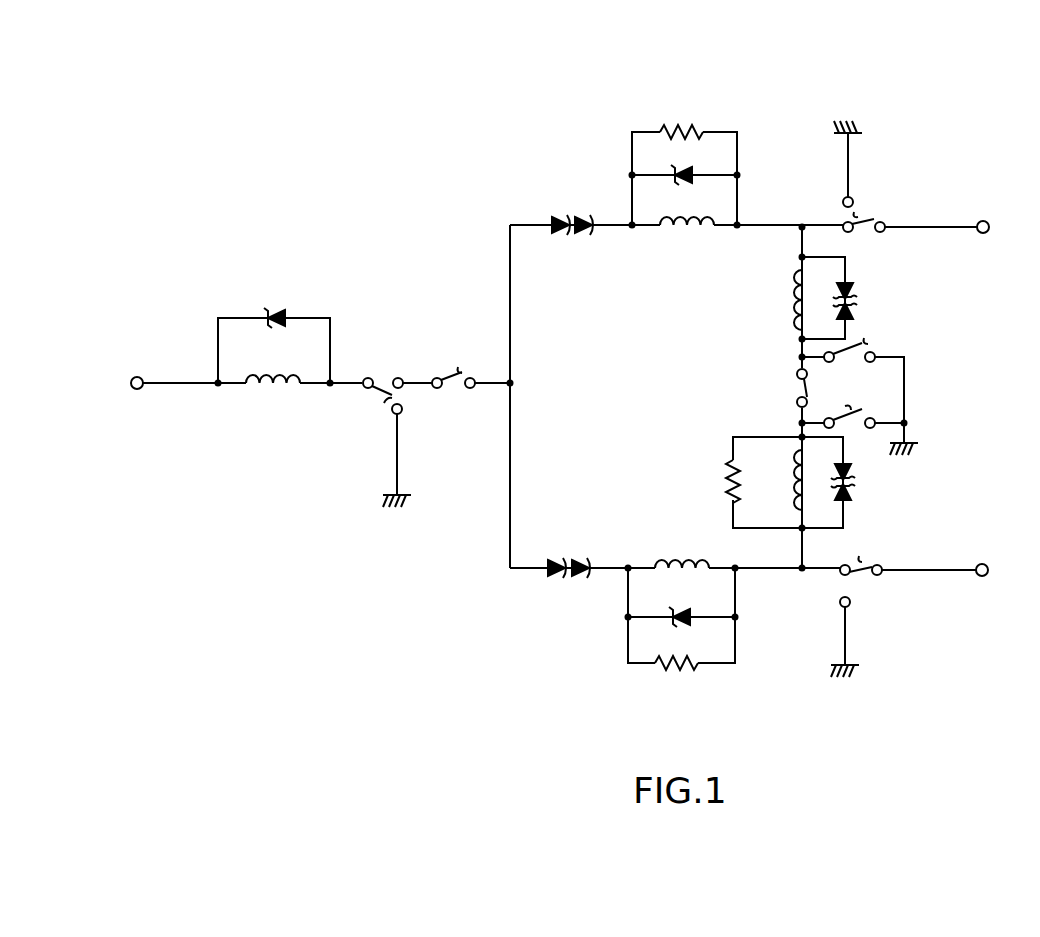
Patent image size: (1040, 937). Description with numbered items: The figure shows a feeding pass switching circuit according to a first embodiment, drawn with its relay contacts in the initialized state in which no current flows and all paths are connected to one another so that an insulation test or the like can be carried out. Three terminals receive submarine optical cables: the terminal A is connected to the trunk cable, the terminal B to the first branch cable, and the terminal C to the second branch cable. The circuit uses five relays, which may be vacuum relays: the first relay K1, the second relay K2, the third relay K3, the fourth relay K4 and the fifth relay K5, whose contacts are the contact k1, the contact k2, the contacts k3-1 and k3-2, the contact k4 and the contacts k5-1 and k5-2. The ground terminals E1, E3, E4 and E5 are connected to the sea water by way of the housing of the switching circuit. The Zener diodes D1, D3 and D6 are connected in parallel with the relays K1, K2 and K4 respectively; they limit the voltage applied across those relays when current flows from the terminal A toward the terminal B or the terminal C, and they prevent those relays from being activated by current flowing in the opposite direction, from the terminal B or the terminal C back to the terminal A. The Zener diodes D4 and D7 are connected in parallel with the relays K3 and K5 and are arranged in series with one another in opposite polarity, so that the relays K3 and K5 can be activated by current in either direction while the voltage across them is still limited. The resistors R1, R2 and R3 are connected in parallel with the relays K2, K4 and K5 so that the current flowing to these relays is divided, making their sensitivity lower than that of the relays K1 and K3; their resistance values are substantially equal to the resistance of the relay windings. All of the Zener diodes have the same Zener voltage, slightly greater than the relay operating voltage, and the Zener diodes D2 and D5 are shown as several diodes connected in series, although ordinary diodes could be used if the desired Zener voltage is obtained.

The terminal A is at (239, 380).
The first relay K1 is at (274, 399).
The Zener diode D1 is at (274, 331).
The contact k3-1 is at (371, 394).
The ground terminal E1 is at (393, 478).
The contact k5-2 is at (458, 368).
The Zener diode D2 is at (571, 207).
The second relay K2 is at (685, 242).
The resistor R1 is at (684, 157).
The Zener diode D3 is at (685, 163).
The contact k4 is at (901, 219).
The ground terminal E3 is at (848, 142).
The terminal B is at (963, 219).
The third relay K3 is at (777, 298).
The Zener diode D4 is at (854, 298).
The contact k3-2 is at (866, 374).
The contact k1 is at (787, 388).
The contact k5-1 is at (855, 406).
The ground terminal E5 is at (917, 447).
The resistor R3 is at (747, 482).
The fifth relay K5 is at (776, 482).
The Zener diode D7 is at (848, 482).
The Zener diode D5 is at (569, 584).
The fourth relay K4 is at (682, 550).
The Zener diode D6 is at (682, 624).
The resistor R2 is at (681, 631).
The contact k2 is at (906, 574).
The ground terminal E4 is at (845, 657).
The terminal C is at (962, 575).